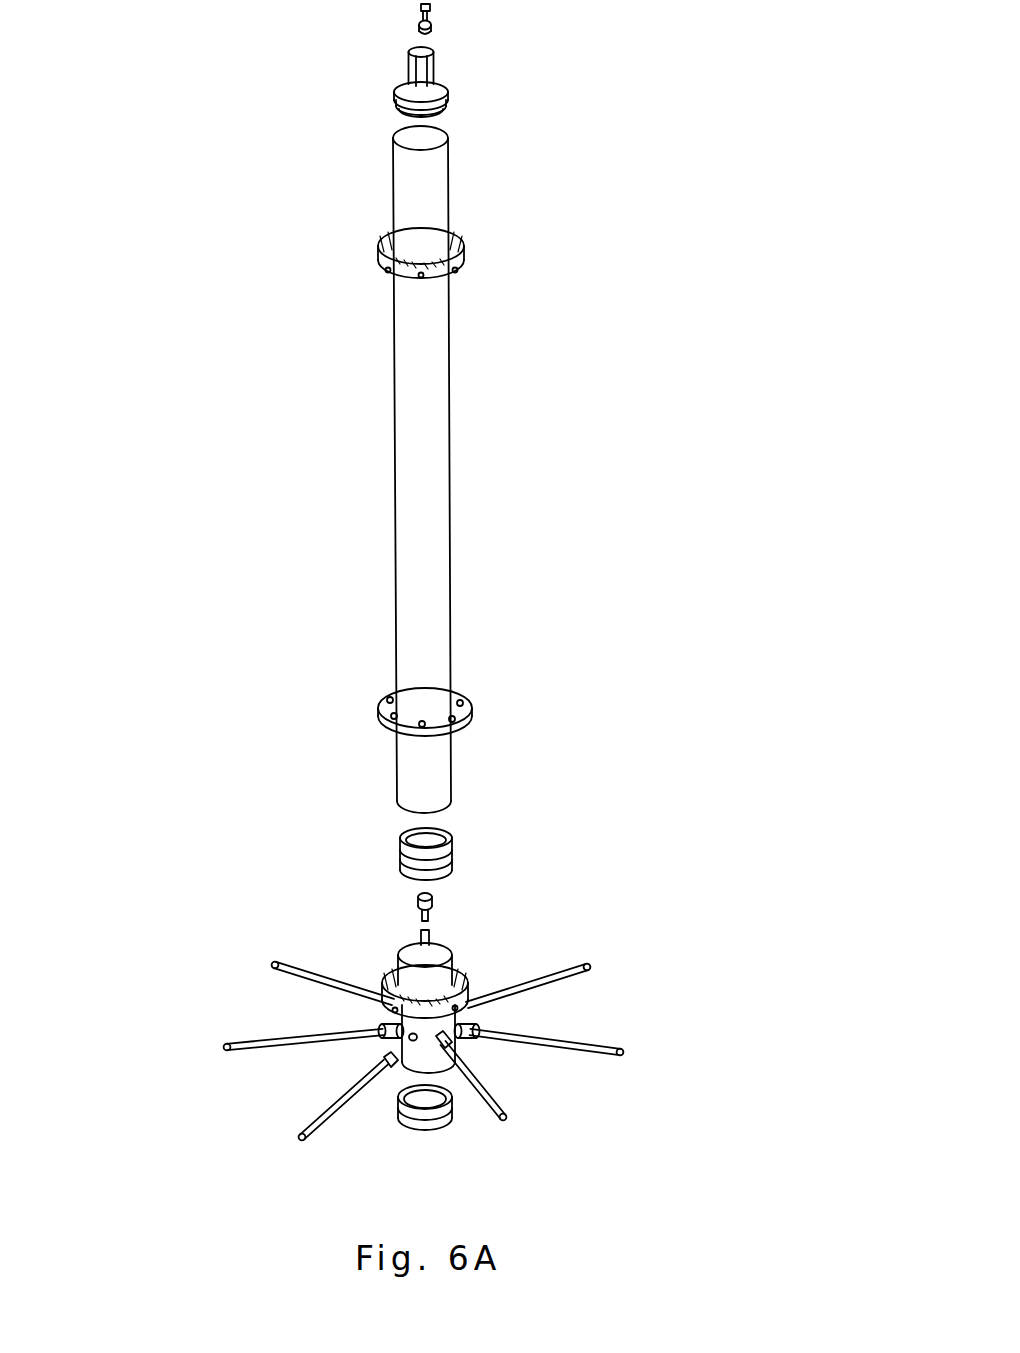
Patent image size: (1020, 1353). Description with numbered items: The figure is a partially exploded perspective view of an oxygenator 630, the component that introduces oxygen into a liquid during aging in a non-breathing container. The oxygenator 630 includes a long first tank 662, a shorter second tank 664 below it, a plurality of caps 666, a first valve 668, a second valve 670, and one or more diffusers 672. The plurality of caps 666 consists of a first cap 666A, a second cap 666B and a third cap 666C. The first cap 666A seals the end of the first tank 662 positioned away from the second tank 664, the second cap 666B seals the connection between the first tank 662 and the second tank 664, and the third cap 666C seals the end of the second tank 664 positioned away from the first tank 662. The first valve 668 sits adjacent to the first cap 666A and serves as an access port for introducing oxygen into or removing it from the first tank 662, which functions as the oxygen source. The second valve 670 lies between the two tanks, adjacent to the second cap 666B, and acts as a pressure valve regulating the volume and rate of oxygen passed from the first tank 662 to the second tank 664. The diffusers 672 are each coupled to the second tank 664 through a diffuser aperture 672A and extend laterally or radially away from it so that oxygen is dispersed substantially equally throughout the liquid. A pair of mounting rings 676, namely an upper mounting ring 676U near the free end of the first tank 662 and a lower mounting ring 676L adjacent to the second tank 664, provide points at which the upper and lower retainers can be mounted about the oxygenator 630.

The oxygenator 630 is at (631, 397).
The first tank 662 is at (430, 495).
The second tank 664 is at (357, 976).
The plurality of caps 666 is at (438, 105).
The first cap 666A is at (398, 102).
The second cap 666B is at (398, 852).
The third cap 666C is at (417, 1118).
The first valve 668 is at (427, 27).
The second valve 670 is at (420, 905).
The diffusers 672 is at (582, 1043).
The diffuser aperture 672A is at (408, 1039).
The mounting rings 676 is at (398, 295).
The upper mounting ring 676U is at (388, 270).
The lower mounting ring 676L is at (393, 1003).